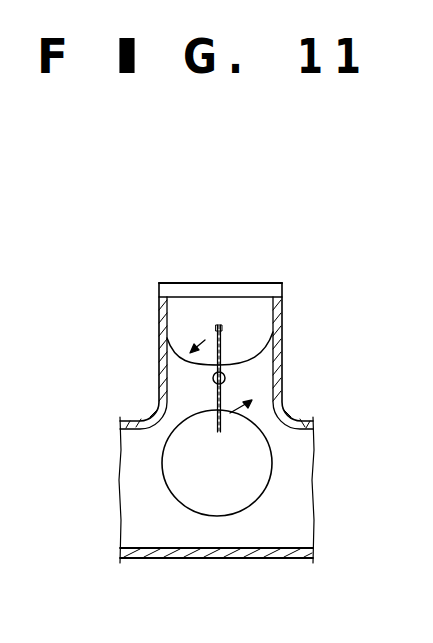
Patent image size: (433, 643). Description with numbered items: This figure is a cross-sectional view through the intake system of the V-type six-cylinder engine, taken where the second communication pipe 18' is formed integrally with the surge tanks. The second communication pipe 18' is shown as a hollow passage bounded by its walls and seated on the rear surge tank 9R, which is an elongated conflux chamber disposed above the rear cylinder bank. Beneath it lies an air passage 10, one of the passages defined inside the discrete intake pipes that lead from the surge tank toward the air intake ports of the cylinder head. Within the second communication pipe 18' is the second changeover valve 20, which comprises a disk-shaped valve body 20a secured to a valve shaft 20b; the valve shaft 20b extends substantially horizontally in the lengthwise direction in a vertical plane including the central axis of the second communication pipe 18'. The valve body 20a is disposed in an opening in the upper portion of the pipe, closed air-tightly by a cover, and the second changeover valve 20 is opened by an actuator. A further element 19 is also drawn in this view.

The second communication pipe 18' is at (231, 423).
The rear surge tank 9R is at (228, 559).
The air passage 10 is at (270, 469).
The diaphragm 19 is at (170, 346).
The second changeover valve 20 is at (225, 328).
The valve body 20a is at (219, 326).
The valve shaft 20b is at (213, 378).